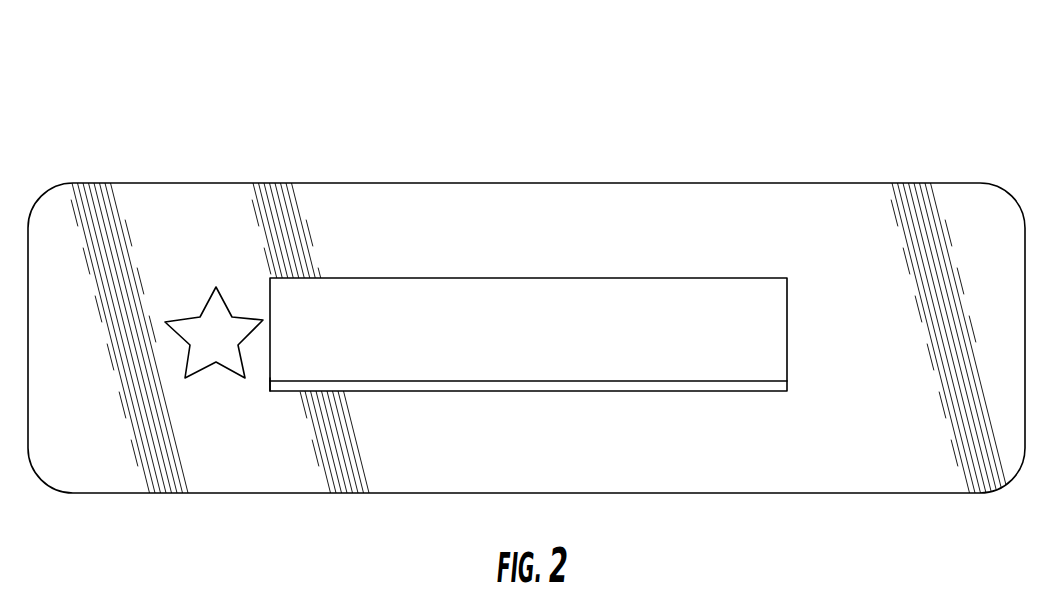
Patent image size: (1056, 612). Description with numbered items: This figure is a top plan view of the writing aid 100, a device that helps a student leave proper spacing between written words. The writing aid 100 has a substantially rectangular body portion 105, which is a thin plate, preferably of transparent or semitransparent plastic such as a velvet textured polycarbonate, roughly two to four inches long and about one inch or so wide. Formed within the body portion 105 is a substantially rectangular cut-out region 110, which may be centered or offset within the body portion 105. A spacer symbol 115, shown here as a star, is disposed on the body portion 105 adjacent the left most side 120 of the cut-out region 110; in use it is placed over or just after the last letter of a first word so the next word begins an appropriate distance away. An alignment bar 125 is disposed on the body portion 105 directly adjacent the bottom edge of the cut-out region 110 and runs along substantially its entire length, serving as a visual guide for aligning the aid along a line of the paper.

The writing aid 100 is at (168, 122).
The body portion 105 is at (968, 182).
The cut-out region 110 is at (788, 305).
The spacer symbol 115 is at (204, 307).
The left most side 120 is at (268, 371).
The alignment bar 125 is at (698, 386).